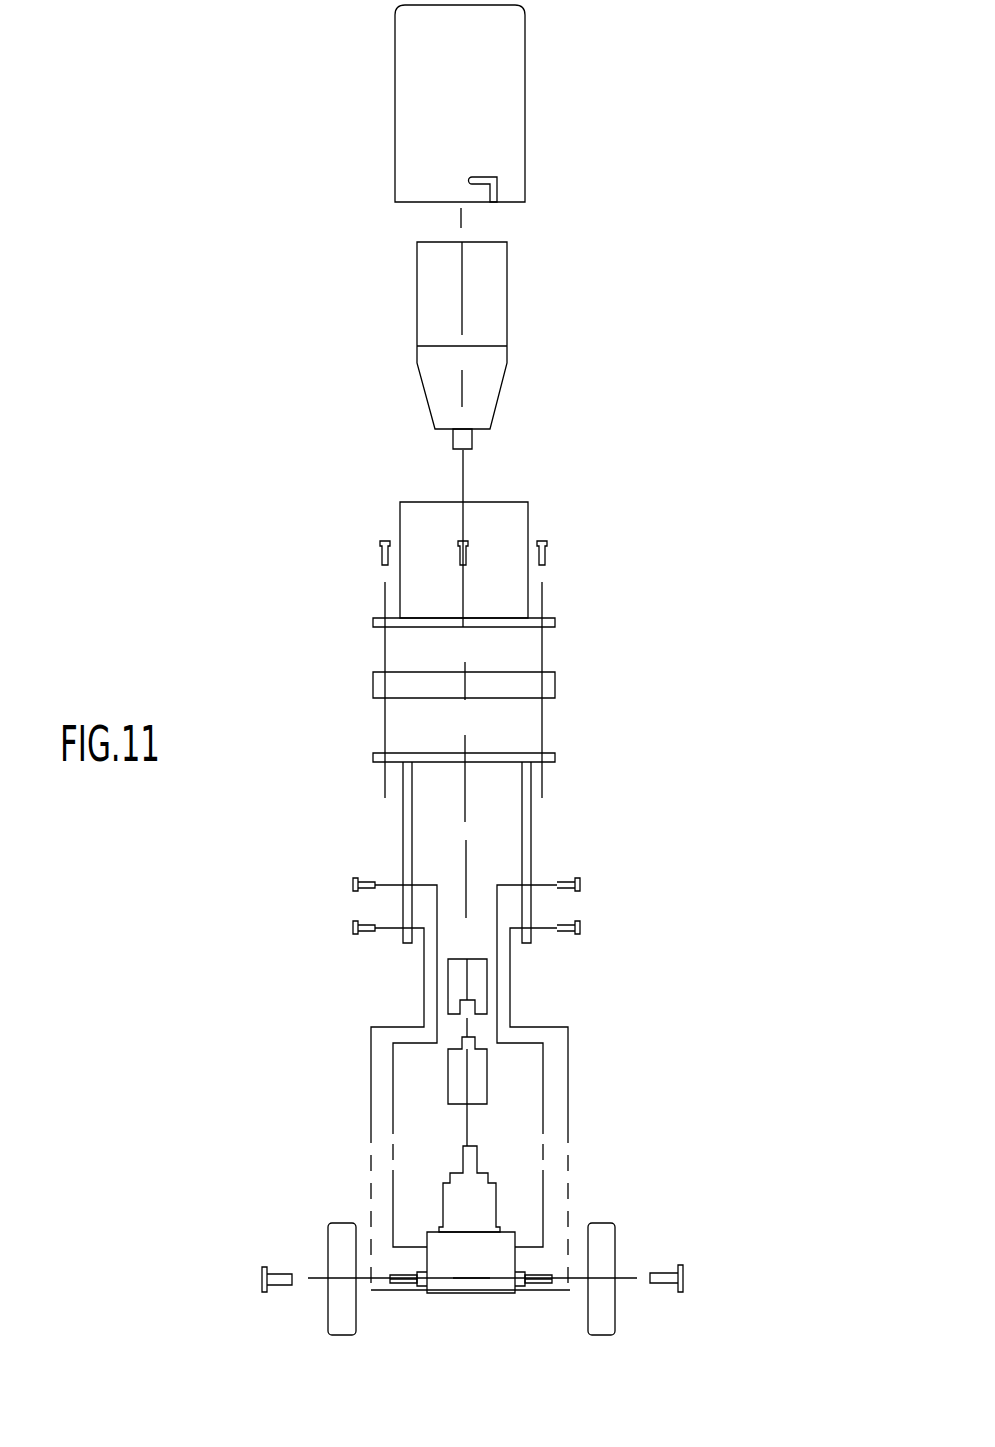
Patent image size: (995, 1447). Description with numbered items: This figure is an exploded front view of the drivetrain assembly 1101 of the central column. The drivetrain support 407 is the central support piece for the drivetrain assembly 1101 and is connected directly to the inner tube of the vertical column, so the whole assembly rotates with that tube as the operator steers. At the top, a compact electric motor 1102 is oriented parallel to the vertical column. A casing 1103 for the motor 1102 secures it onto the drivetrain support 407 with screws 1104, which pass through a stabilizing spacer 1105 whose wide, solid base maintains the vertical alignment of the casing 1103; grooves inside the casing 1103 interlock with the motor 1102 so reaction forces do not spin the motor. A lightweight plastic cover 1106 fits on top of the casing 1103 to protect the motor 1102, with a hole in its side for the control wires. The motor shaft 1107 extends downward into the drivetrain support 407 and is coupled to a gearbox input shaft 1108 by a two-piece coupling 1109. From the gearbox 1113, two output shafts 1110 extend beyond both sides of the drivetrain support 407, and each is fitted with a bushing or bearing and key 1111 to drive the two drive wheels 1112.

The drivetrain support 407 is at (531, 835).
The drivetrain assembly 1101 is at (352, 525).
The electric motor 1102 is at (417, 305).
The casing 1103 is at (528, 509).
The screws 1104 is at (548, 553).
The stabilizing spacer 1105 is at (373, 685).
The cover 1106 is at (525, 62).
The motor shaft 1107 is at (472, 439).
The gearbox input shaft 1108 is at (463, 1153).
The two-piece coupling 1109 is at (448, 1085).
The output shafts 1110 is at (562, 1340).
The bushing or bearing and key 1111 is at (710, 1212).
The drive wheels 1112 is at (655, 1133).
The gearbox 1113 is at (438, 1293).